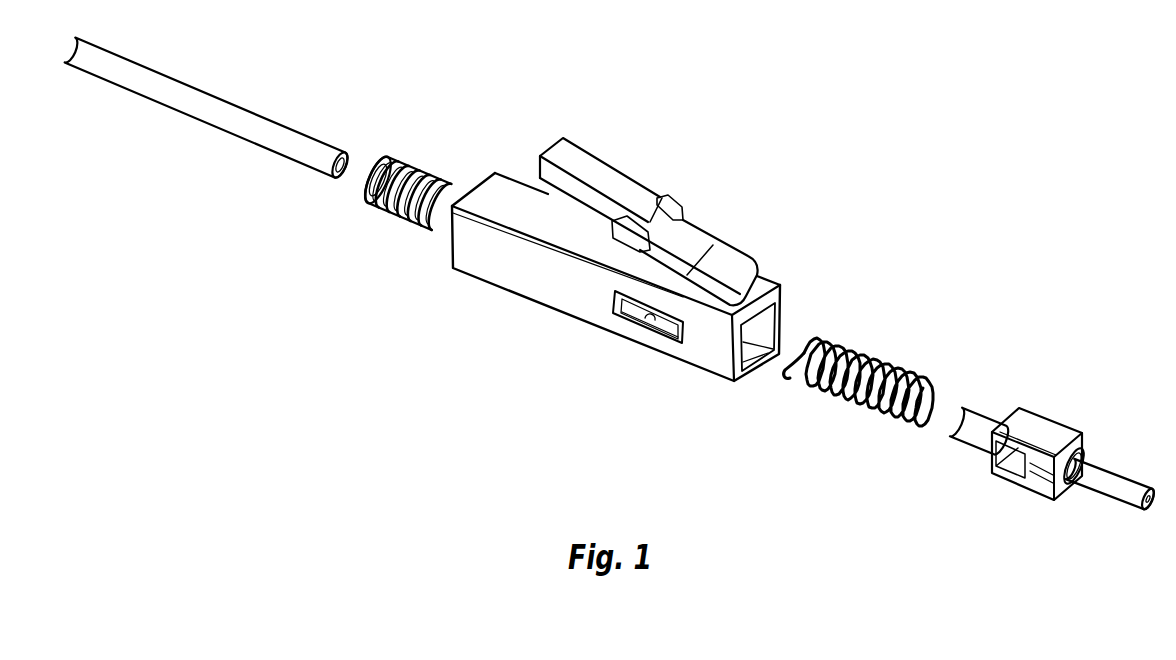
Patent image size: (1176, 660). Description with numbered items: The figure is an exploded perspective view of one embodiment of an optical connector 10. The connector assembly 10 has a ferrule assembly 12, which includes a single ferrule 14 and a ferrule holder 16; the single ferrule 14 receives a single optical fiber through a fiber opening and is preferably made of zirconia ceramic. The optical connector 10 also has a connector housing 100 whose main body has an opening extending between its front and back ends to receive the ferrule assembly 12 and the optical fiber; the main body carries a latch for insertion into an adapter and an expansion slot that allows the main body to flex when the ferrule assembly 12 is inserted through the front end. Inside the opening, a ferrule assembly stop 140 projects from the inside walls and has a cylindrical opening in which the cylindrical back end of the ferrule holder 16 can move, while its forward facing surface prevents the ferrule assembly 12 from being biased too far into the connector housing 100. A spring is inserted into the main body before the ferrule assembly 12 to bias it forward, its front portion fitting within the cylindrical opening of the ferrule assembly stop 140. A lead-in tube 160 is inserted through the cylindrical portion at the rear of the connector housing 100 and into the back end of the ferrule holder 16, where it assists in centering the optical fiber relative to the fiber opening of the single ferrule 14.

The optical connector 10 is at (816, 110).
The ferrule assembly 12 is at (996, 367).
The single ferrule 14 is at (1127, 475).
The ferrule holder 16 is at (1055, 413).
The connector housing 100 is at (483, 282).
The ferrule assembly stop 140 is at (888, 352).
The lead-in tube 160 is at (284, 120).